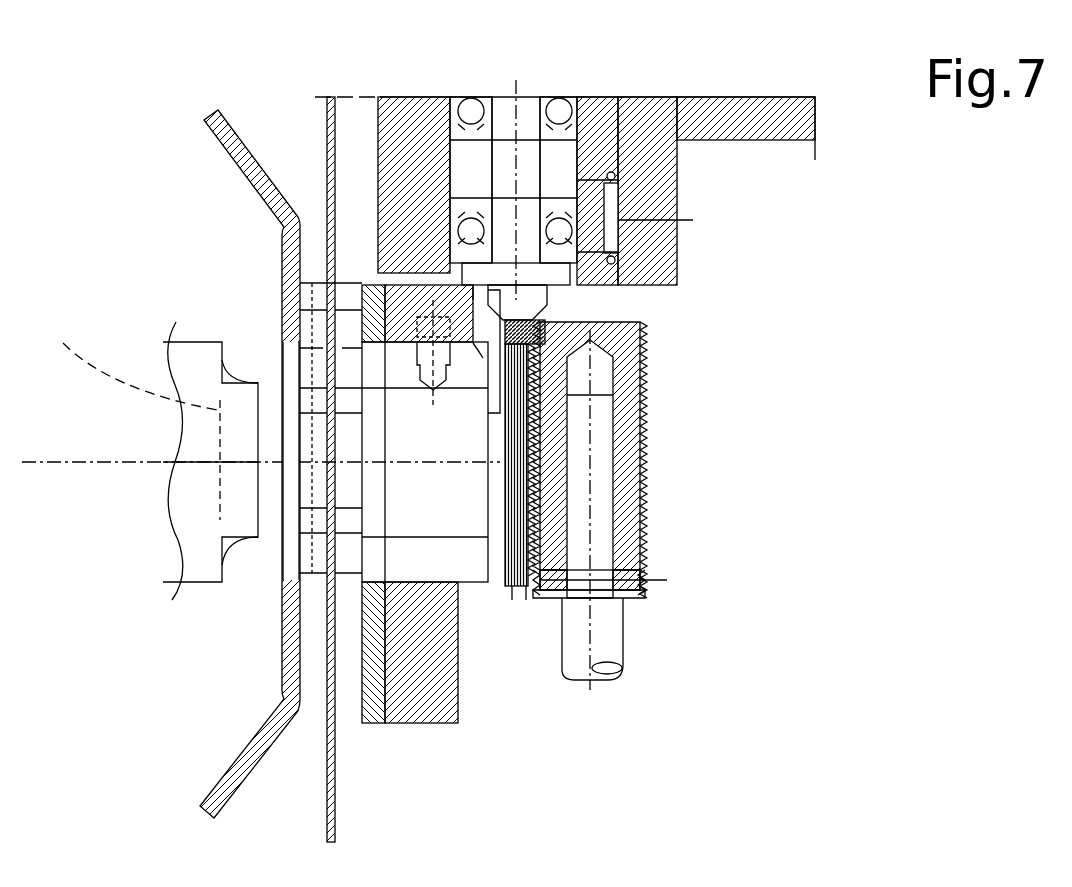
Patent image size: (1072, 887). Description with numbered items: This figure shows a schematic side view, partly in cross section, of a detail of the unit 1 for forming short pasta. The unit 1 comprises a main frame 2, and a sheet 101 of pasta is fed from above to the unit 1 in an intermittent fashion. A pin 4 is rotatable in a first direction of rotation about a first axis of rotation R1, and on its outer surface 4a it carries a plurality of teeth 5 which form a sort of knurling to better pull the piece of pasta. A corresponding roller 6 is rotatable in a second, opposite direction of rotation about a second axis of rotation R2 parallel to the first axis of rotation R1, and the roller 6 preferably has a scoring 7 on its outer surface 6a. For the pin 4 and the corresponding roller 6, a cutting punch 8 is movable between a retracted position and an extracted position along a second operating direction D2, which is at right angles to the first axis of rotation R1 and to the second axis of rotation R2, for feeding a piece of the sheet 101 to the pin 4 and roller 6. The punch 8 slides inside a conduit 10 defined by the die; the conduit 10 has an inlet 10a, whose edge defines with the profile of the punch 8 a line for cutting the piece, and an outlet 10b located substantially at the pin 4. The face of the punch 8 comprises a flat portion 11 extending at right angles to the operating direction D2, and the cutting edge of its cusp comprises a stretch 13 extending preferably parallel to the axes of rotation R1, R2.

The unit for forming short pasta 1 is at (370, 779).
The main frame 2 is at (650, 125).
The pin 4 is at (530, 318).
The outer surface 4a is at (575, 497).
The teeth 5 is at (526, 586).
The roller 6 is at (640, 498).
The outer surface 6a is at (647, 433).
The scoring 7 is at (648, 358).
The cutting punch 8 is at (184, 584).
The conduit 10 is at (449, 525).
The inlet 10a is at (361, 342).
The outlet 10b is at (480, 346).
The flat portion 11 is at (133, 364).
The stretch 13 is at (257, 514).
The sheet 101 is at (323, 120).
The first axis of rotation R1 is at (504, 97).
The second axis of rotation R2 is at (627, 662).
The second operating direction D2 is at (97, 466).